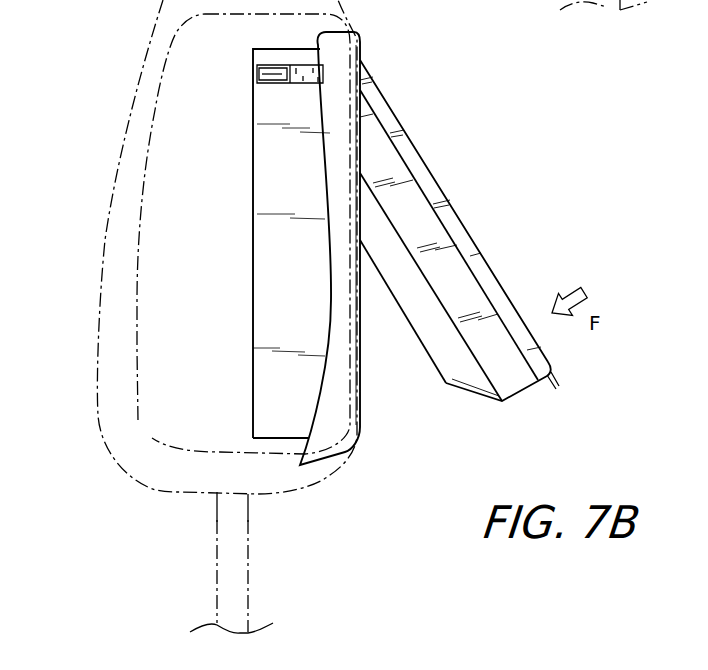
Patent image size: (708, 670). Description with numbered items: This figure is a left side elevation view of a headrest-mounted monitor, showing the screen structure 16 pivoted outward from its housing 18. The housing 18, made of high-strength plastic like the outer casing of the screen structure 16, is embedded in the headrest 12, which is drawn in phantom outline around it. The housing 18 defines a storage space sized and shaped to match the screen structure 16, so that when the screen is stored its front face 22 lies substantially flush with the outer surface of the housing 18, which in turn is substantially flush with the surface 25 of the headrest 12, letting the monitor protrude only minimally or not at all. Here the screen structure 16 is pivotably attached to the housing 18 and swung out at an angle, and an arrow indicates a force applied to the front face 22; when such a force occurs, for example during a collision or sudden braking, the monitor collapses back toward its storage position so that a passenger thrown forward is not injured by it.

The headrest 12 is at (192, 118).
The housing 18 is at (285, 315).
The surface of the headrest 25 is at (354, 22).
The front face of the screen structure 22 is at (437, 173).
The screen structure 16 is at (462, 283).